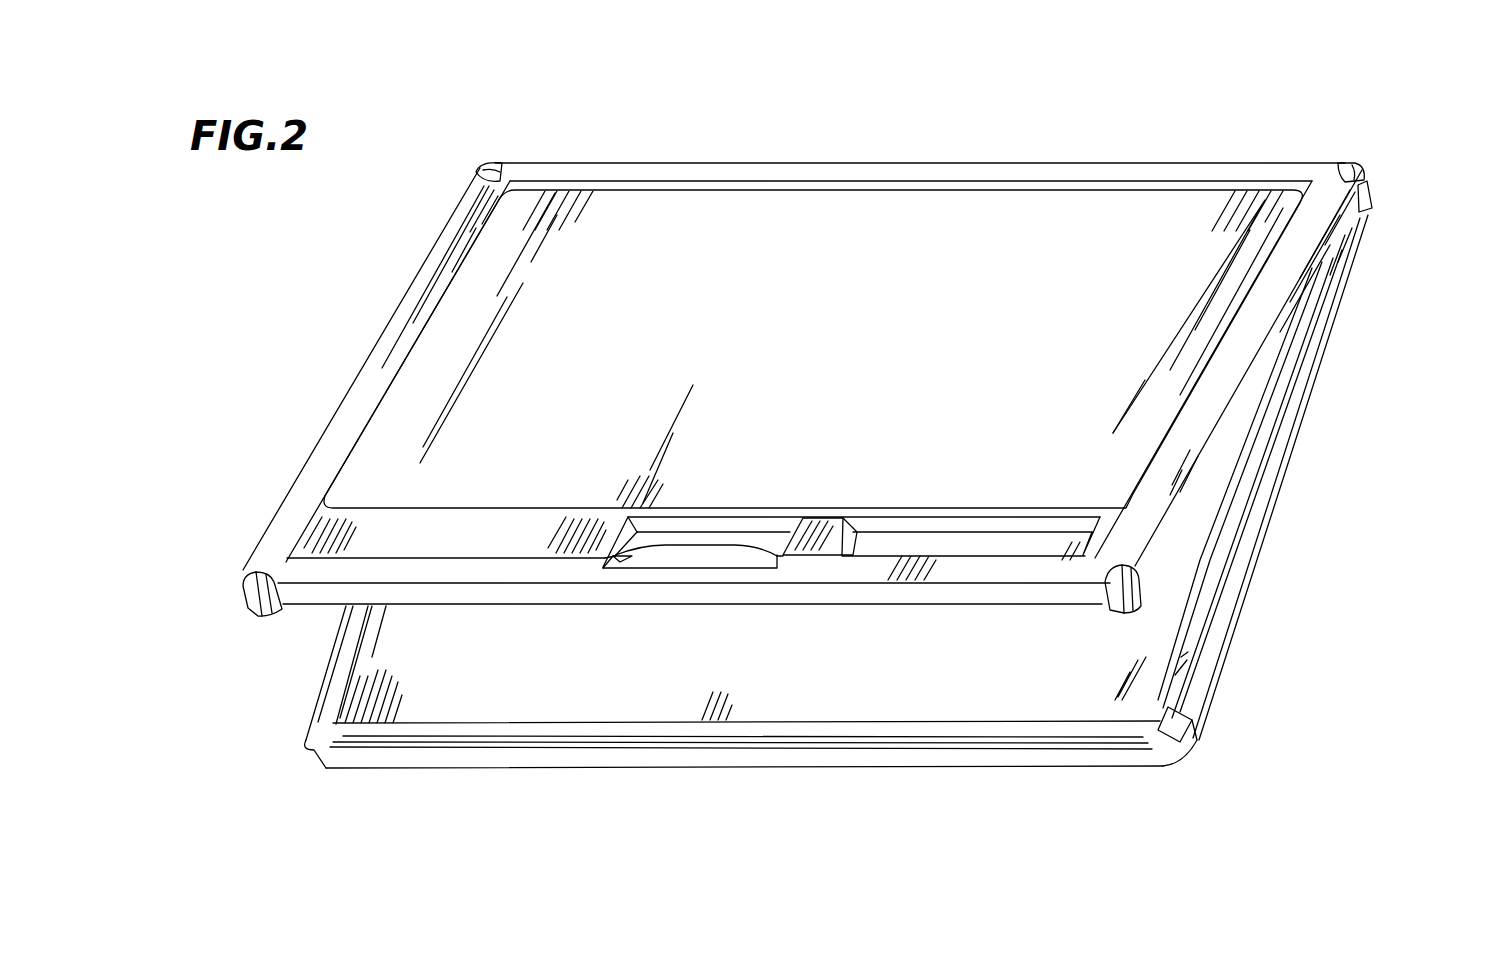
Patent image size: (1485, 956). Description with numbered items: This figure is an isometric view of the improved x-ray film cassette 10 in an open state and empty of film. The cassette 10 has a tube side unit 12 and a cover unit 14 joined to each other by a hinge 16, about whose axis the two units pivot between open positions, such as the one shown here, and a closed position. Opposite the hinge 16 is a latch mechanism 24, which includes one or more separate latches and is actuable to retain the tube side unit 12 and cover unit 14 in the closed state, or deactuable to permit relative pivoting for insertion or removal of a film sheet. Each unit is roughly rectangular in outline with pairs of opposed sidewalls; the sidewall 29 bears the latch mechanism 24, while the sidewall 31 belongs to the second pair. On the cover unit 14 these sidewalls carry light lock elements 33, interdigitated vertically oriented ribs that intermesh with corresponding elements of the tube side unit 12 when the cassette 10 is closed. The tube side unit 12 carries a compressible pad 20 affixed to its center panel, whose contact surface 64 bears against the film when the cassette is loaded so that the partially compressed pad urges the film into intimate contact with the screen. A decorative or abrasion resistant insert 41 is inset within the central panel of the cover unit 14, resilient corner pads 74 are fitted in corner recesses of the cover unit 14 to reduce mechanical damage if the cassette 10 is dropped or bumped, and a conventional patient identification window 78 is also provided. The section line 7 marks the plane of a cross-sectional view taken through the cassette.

The section line 7- 7 is at (803, 160).
The film cassette 10 is at (898, 114).
The tube side unit 12 is at (337, 637).
The cover unit 14 is at (368, 373).
The hinge 16 is at (1108, 163).
The compressible pad 20 is at (755, 721).
The latch mechanism 24 is at (737, 570).
The sidewall 29 is at (323, 757).
The sidewall 31 is at (1327, 242).
The light lock elements 33 is at (1174, 766).
The insert 41 is at (948, 390).
The contact surface 64 is at (665, 675).
The resilient corner pads 74 is at (479, 165).
The patient identification window 78 is at (1108, 541).